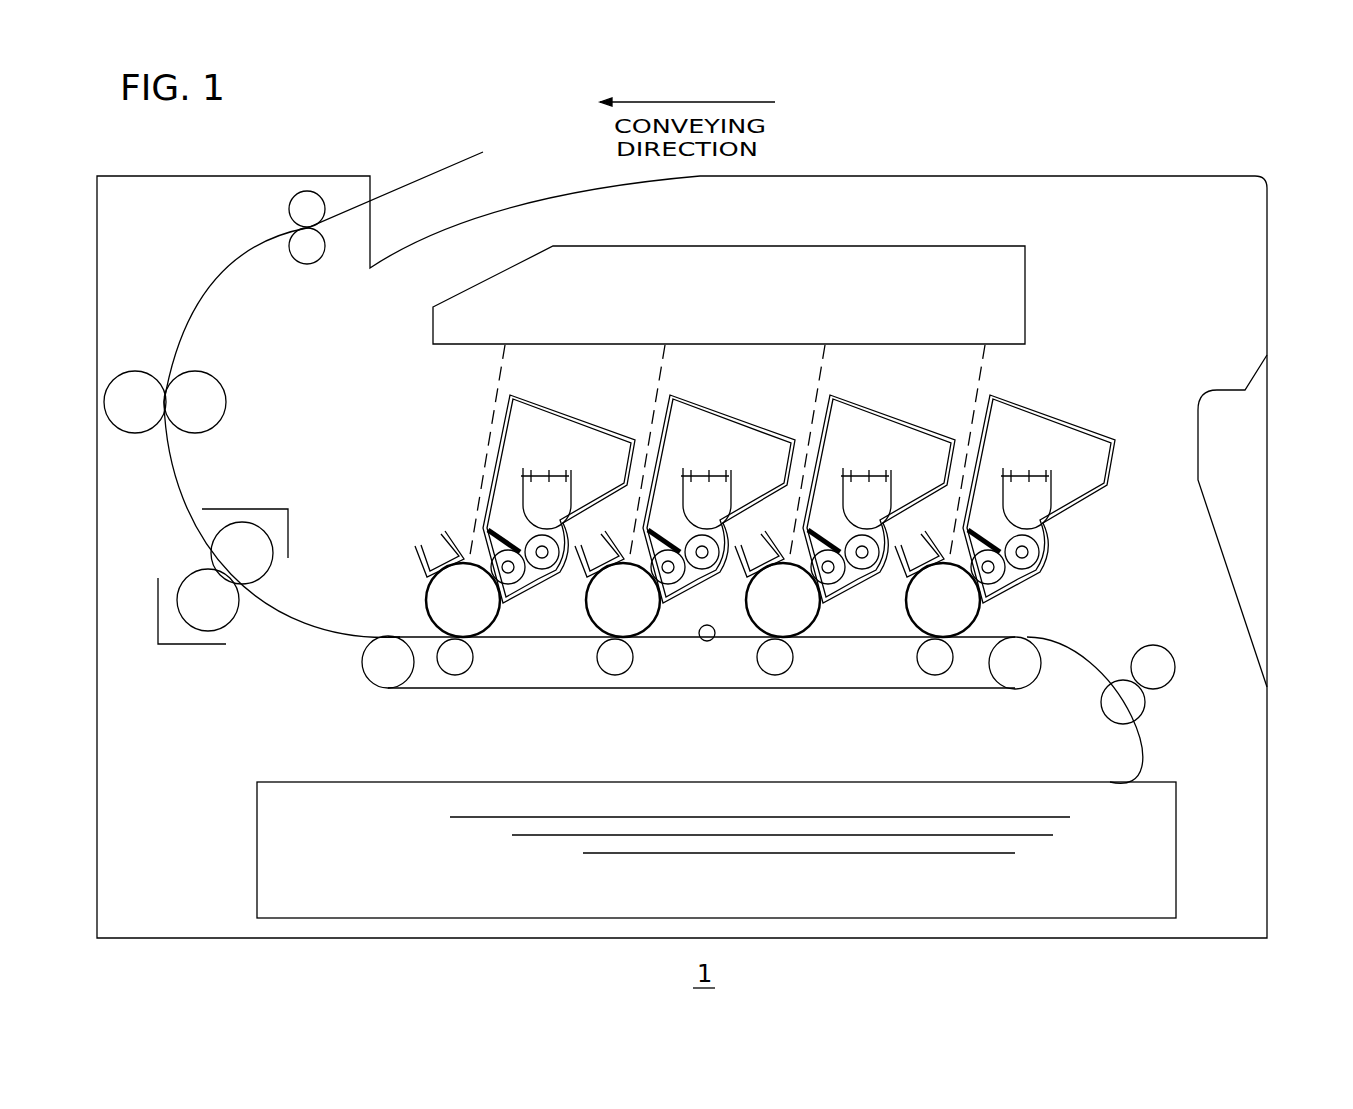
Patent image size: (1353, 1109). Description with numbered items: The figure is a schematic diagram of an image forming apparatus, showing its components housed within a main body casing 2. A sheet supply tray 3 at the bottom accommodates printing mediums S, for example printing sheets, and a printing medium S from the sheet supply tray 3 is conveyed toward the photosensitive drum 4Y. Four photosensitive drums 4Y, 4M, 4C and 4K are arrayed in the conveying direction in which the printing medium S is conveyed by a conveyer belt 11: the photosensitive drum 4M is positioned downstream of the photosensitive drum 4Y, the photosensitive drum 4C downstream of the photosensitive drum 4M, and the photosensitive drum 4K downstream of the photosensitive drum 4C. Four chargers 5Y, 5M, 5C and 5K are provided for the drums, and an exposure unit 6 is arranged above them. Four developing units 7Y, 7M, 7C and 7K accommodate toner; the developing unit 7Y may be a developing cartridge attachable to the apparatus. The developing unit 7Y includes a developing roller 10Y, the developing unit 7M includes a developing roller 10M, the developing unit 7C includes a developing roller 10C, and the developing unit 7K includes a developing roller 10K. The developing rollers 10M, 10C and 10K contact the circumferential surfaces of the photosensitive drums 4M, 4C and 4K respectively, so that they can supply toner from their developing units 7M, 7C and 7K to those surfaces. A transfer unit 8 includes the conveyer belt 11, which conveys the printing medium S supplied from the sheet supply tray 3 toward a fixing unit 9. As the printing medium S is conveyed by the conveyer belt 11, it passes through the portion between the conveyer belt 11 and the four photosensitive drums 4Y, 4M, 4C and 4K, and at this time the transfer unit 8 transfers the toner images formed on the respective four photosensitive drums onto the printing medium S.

The main body casing 2 is at (830, 173).
The sheet supply tray 3 is at (1175, 790).
The photosensitive drum 4K is at (437, 627).
The photosensitive drum 4C is at (610, 655).
The photosensitive drum 4M is at (770, 655).
The photosensitive drum 4Y is at (930, 655).
The charger 5K is at (437, 547).
The charger 5C is at (599, 515).
The charger 5M is at (759, 515).
The charger 5Y is at (919, 515).
The exposure unit 6 is at (897, 243).
The developing unit 7K is at (570, 410).
The developing unit 7C is at (719, 446).
The developing unit 7M is at (879, 446).
The developing unit 7Y is at (1039, 446).
The transfer unit 8 is at (1030, 637).
The fixing unit 9 is at (247, 503).
The developing roller 10K is at (492, 590).
The developing roller 10C is at (658, 649).
The developing roller 10M is at (818, 649).
The developing roller 10Y is at (978, 649).
The conveyer belt 11 is at (705, 641).
The printing medium S is at (448, 175).